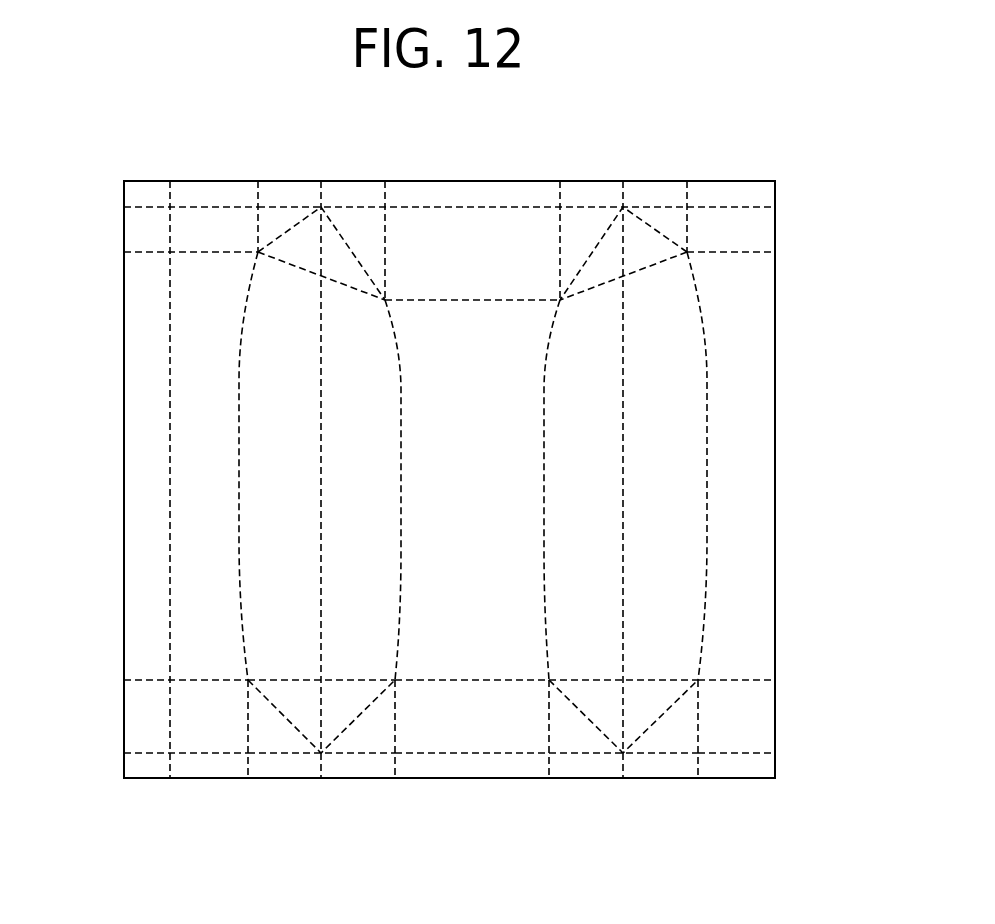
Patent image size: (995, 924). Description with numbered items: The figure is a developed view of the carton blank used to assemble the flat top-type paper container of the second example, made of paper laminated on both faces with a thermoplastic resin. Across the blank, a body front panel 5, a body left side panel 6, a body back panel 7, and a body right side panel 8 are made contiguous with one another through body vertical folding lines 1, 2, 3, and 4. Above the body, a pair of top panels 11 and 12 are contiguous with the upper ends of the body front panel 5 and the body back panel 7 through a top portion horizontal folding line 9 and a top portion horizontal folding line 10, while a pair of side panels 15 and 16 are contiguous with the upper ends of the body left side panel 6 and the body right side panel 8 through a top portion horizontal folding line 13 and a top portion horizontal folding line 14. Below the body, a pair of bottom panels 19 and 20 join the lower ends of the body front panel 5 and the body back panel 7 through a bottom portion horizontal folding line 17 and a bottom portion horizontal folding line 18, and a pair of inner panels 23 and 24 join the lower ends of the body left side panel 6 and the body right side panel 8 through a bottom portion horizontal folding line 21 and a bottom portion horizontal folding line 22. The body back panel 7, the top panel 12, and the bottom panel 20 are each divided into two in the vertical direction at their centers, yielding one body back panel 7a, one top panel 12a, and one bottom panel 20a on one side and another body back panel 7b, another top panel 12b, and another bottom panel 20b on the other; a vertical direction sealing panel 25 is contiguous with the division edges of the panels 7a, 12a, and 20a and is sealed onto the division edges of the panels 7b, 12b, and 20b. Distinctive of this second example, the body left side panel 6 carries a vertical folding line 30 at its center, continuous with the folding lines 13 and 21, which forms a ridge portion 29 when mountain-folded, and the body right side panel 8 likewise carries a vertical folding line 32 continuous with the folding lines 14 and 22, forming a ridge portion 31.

The body vertical folding line 1 is at (546, 522).
The body vertical folding line 2 is at (402, 522).
The body vertical folding line 3 is at (241, 522).
The body vertical folding line 4 is at (705, 522).
The body front panel 5 is at (468, 489).
The body left side panel 6 is at (270, 489).
The body back panel 7 is at (195, 444).
The one body back panel 7a is at (240, 489).
The another body back panel 7b is at (708, 489).
The body right side panel 8 is at (574, 489).
The top portion horizontal folding line 9 is at (476, 303).
The top portion horizontal folding line 10 is at (198, 256).
The top panel 11 is at (459, 270).
The top panel 12 is at (212, 242).
The one top panel 12a is at (185, 220).
The another top panel 12b is at (765, 220).
The top portion horizontal folding line 13 is at (287, 266).
The top portion horizontal folding line 14 is at (655, 266).
The side panel 15 is at (282, 260).
The side panel 16 is at (629, 260).
The bottom portion horizontal folding line 17 is at (478, 679).
The bottom portion horizontal folding line 18 is at (213, 679).
The bottom panel 19 is at (459, 737).
The bottom panel 20 is at (189, 737).
The one bottom panel 20a is at (185, 702).
The another bottom panel 20b is at (757, 703).
The bottom portion horizontal folding line 21 is at (356, 679).
The bottom portion horizontal folding line 22 is at (661, 679).
The inner panel 23 is at (282, 711).
The inner panel 24 is at (584, 711).
The vertical direction sealing panel 25 is at (140, 426).
The ridge portion 29 is at (323, 403).
The vertical folding line 30 is at (323, 452).
The ridge portion 31 is at (625, 403).
The vertical folding line 32 is at (625, 452).